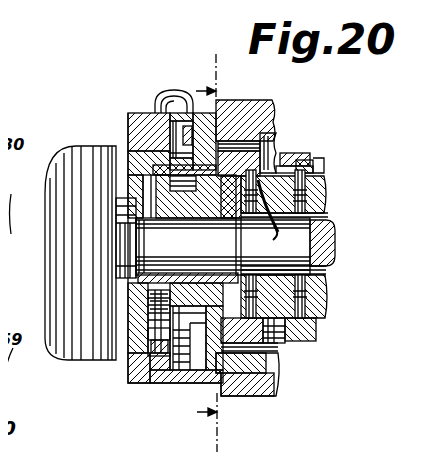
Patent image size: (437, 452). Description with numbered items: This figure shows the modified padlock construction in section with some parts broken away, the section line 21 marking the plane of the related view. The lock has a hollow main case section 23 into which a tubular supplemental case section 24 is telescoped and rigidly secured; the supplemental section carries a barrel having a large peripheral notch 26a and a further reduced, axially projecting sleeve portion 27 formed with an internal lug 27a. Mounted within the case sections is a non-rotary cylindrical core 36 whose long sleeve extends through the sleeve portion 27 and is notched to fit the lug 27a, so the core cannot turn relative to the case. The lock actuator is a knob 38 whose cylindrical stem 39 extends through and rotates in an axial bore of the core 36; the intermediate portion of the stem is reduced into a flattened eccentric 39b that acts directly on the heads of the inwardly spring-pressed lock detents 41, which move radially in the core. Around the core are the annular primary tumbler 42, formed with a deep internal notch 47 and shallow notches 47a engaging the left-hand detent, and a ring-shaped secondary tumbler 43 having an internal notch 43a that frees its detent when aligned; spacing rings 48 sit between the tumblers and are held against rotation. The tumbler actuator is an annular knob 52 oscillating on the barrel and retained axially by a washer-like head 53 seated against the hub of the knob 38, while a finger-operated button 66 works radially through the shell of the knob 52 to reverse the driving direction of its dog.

The section line 21 is at (223, 253).
The hollow main case section 23 is at (252, 104).
The supplemental case section 24 is at (198, 378).
The peripheral notch 26a is at (125, 372).
The sleeve portion 27 is at (205, 212).
The internal lug 27a is at (145, 212).
The non-rotary cylindrical core 36 is at (318, 181).
The knob 38 is at (76, 340).
The cylindrical stem 39 is at (197, 247).
The flattened eccentric 39b is at (327, 232).
The lock detents 41 is at (288, 239).
The primary tumbler 42 is at (270, 140).
The secondary tumbler 43 is at (302, 147).
The internal notch 43a is at (305, 157).
The deep internal notch 47 is at (273, 146).
The shallow notches 47a is at (266, 150).
The spacing rings 48 is at (308, 322).
The annular knob 52 is at (143, 372).
The washer-like head 53 is at (128, 336).
The finger-operated button 66 is at (158, 82).